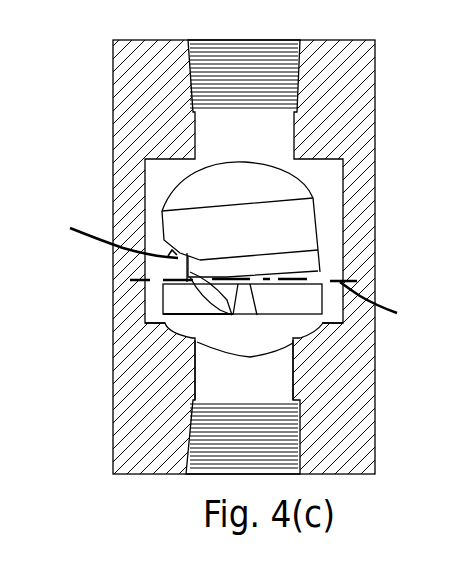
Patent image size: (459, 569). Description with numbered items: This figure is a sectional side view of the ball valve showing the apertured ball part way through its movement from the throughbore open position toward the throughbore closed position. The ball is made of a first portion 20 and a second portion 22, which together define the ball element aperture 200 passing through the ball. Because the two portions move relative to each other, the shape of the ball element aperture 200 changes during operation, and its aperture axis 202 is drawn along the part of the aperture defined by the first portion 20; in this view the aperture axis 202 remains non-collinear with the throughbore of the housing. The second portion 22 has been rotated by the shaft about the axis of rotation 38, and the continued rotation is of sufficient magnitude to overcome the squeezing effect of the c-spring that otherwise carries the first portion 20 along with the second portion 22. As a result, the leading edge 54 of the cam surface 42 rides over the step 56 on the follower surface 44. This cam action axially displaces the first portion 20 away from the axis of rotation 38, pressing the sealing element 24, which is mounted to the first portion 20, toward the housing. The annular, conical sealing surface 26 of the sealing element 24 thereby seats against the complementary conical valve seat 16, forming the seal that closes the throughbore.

The valve seat 16 is at (297, 340).
The first portion 20 is at (315, 298).
The second portion 22 is at (268, 185).
The sealing element 24 is at (249, 353).
The sealing surface 26 is at (194, 342).
The axis of rotation 38 is at (240, 251).
The cam surface 42 is at (305, 282).
The follower surface 44 is at (165, 306).
The leading edge 54 is at (188, 270).
The step 56 is at (232, 315).
The ball element aperture 200 is at (101, 241).
The aperture axis 202 is at (393, 302).